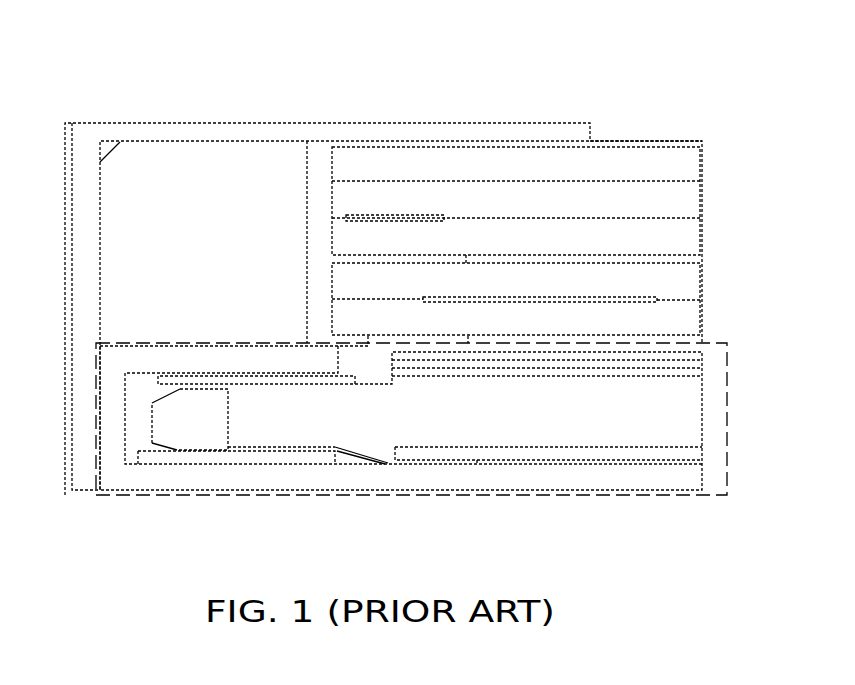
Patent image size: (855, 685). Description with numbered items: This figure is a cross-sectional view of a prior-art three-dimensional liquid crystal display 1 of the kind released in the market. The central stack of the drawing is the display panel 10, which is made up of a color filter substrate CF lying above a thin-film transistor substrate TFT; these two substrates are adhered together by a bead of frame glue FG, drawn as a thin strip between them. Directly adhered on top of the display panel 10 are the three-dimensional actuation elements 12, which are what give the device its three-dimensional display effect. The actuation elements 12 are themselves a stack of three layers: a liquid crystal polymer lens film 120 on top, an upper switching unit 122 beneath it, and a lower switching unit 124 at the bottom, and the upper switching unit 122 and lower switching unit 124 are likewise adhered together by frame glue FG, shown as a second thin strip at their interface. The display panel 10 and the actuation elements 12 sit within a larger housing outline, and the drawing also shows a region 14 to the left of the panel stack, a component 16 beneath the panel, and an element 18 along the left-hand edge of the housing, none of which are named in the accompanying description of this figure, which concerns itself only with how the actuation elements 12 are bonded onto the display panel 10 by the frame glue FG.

The 3D liquid crystal display 1 is at (70, 37).
The frame 18 is at (82, 235).
The circuit region 14 is at (226, 256).
The 3D actuation elements 12 is at (707, 145).
The liquid crystal polymer (LCP) lens film 120 is at (548, 177).
The upper switching unit 122 is at (548, 213).
The lower switching unit 124 is at (548, 250).
The display panel 10 is at (707, 263).
The color filter substrate CF is at (541, 295).
The thin-film transistor substrate TFT is at (546, 332).
The frame glue FG is at (368, 215).
The backlight module 16 is at (728, 387).